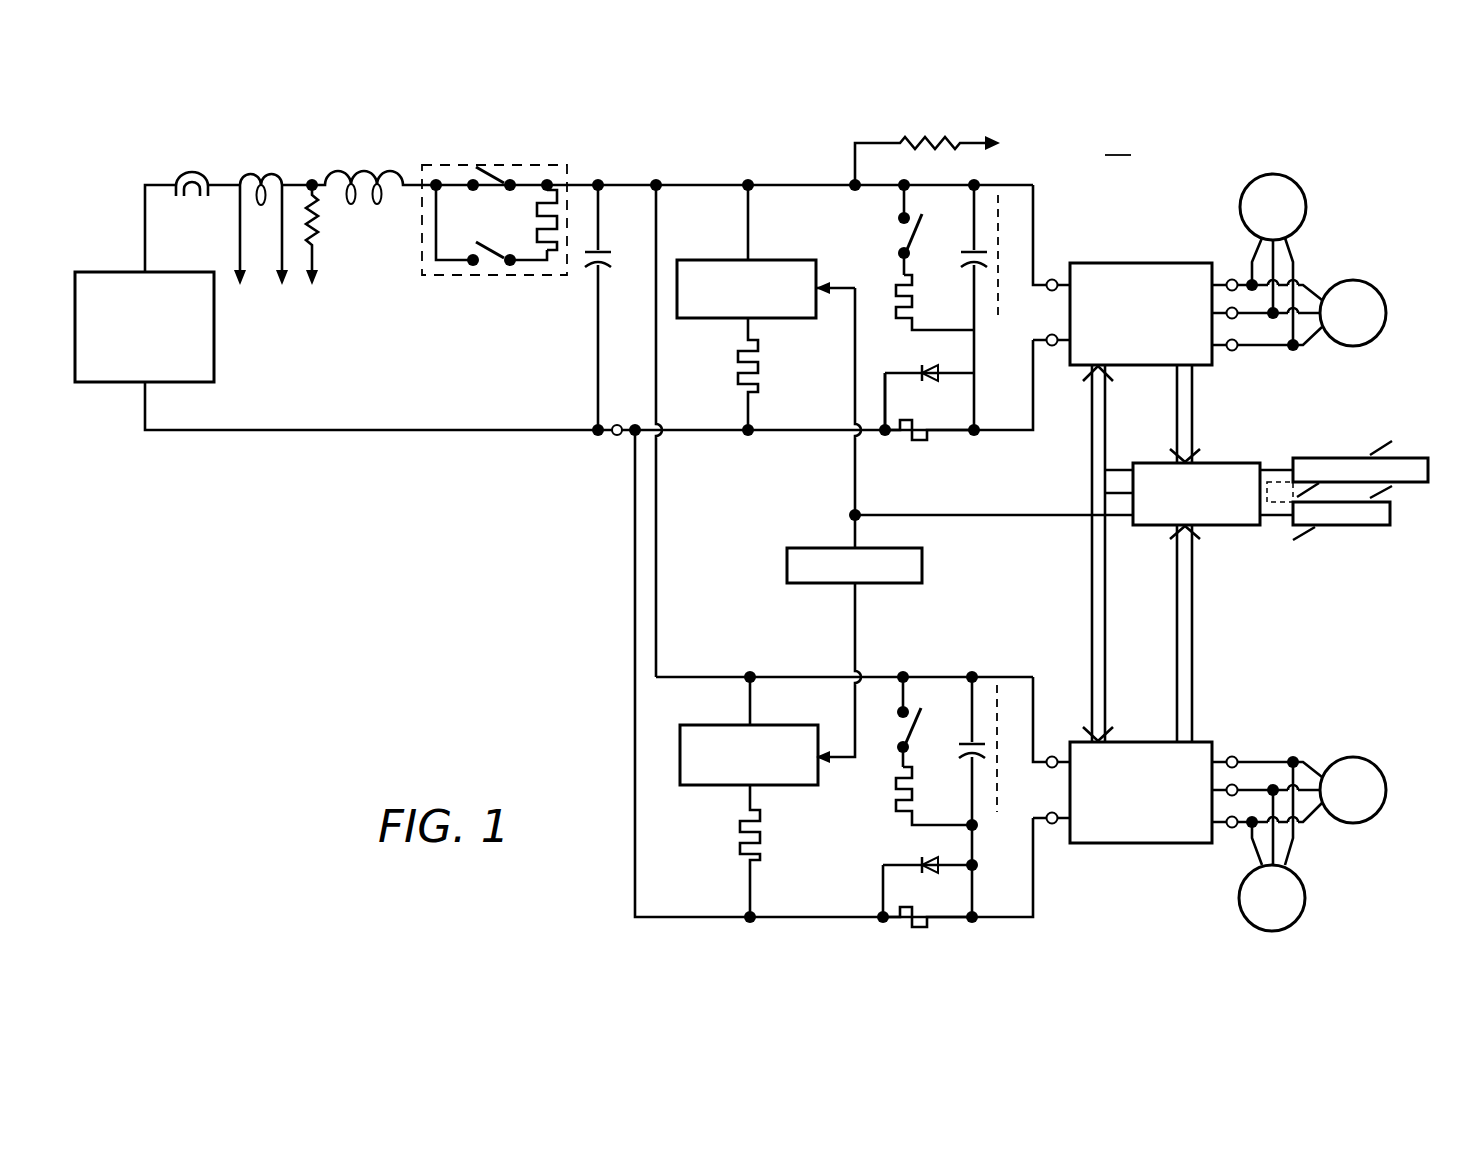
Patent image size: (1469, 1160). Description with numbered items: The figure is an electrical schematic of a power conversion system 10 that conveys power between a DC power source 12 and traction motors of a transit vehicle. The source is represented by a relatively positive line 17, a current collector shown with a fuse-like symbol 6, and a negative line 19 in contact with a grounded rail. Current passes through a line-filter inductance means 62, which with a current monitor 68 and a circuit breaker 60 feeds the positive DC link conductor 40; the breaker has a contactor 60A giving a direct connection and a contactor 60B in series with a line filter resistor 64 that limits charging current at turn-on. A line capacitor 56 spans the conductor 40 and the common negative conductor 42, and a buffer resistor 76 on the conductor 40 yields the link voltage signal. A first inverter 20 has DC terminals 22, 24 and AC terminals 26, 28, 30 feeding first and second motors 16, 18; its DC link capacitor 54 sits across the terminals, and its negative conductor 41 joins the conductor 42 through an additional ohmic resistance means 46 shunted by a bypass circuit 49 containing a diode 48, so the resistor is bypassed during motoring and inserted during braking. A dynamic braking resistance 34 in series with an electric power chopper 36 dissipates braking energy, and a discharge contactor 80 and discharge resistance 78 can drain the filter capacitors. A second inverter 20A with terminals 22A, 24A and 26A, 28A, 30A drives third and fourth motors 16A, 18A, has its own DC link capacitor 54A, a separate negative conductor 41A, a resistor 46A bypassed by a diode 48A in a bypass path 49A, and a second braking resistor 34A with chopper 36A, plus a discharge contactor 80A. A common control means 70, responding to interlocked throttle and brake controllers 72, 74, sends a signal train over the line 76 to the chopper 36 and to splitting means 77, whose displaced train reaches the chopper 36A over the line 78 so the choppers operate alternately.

The power conversion system 10 is at (1119, 142).
The fuse 6 is at (186, 172).
The DC power source 12 is at (214, 333).
The first motor 16 is at (1358, 280).
The third AC motor 16A is at (1356, 757).
The positive line 17 is at (147, 240).
The second motor 18 is at (1268, 175).
The fourth AC motor 18A is at (1302, 912).
The negative line 19 is at (147, 422).
The controllable converter 20 is at (1155, 262).
The second inverter 20A is at (1140, 843).
The DC terminal 22 is at (1052, 280).
The positive DC terminal 22A is at (1052, 756).
The DC terminal 24 is at (1052, 346).
The negative DC terminal 24A is at (1052, 823).
The AC terminal 26 is at (1226, 278).
The AC terminal 26A is at (1232, 755).
The AC terminal 28 is at (1236, 318).
The AC terminal 28A is at (1248, 778).
The AC terminal 30 is at (1236, 350).
The AC terminal 30A is at (1232, 828).
The dynamic braking resistance 34 is at (754, 372).
The dynamic braking resistor 34A is at (742, 848).
The electric power chopper 36 is at (706, 322).
The second electric power chopper 36A is at (714, 788).
The conductor 40 is at (724, 183).
The negative conductor 41 is at (1033, 424).
The separate conductor 41A is at (1033, 893).
The negative conductor 42 is at (613, 438).
The additional ohmic resistance means 46 is at (910, 438).
The second additional ohmic resistance means 46A is at (915, 927).
The diode 48 is at (940, 372).
The diode 48A is at (935, 862).
The bypass circuit 49 is at (918, 372).
The second diode connection 49A is at (915, 866).
The DC link capacitor 54 is at (968, 262).
The second DC link capacitor 54A is at (962, 762).
The line capacitor 56 is at (605, 268).
The electric circuit breaker 60 is at (536, 223).
The contactor 60A is at (484, 188).
The contactor 60B is at (486, 270).
The line-filter inductance means 62 is at (352, 172).
The line filter resistor 64 is at (557, 232).
The current monitor 68 is at (262, 176).
The control means 70 is at (1230, 460).
The throttle controller 72 is at (1344, 456).
The brake controller 74 is at (1325, 528).
The line 76 is at (905, 142).
The splitting means 77 is at (922, 565).
The line 78 is at (896, 280).
The discharge contactor 80 is at (908, 236).
The second switch 80A is at (935, 712).